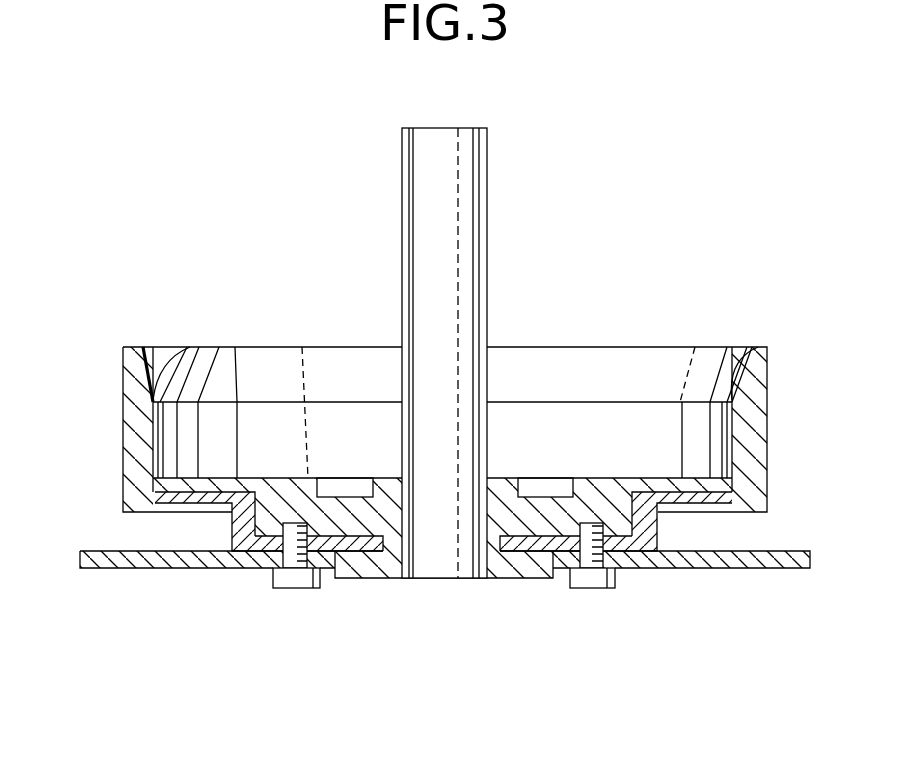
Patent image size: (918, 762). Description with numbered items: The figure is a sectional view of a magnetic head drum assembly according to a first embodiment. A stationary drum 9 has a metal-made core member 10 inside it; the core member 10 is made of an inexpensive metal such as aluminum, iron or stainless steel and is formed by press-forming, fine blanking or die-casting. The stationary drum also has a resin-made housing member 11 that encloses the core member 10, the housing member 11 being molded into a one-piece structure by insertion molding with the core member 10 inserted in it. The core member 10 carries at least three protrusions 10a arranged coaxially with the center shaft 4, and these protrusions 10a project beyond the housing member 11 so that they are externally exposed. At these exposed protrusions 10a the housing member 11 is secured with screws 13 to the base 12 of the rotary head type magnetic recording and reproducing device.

The center shaft 4 is at (470, 252).
The stationary drum 9 is at (638, 316).
The core member 10 is at (207, 513).
The protrusions 10a is at (625, 570).
The housing member 11 is at (152, 376).
The base 12 is at (692, 560).
The screws 13 is at (592, 585).